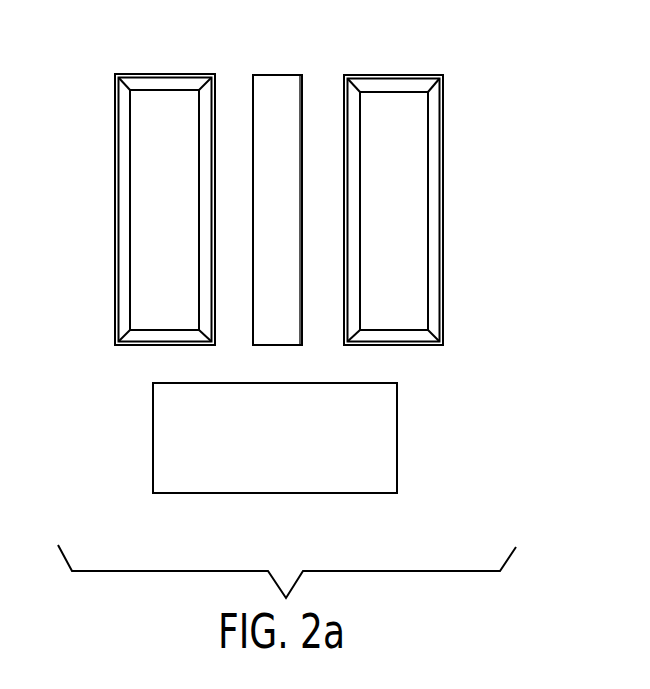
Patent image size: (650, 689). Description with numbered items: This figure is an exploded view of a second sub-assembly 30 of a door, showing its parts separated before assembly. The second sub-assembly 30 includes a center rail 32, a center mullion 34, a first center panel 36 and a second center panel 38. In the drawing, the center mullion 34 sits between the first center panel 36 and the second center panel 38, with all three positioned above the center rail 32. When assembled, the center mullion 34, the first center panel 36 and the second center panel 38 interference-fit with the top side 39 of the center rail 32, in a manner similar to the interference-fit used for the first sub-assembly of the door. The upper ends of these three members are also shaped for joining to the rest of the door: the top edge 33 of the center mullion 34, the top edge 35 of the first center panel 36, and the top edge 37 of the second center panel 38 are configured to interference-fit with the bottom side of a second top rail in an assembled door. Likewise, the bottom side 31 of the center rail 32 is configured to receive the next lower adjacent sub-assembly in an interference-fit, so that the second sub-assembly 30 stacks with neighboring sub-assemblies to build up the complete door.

The second sub-assembly 30 is at (577, 302).
The bottom side 31 is at (370, 494).
The center rail 32 is at (397, 456).
The top edge 33 is at (283, 74).
The center mullion 34 is at (253, 118).
The top edge 35 is at (147, 73).
The first center panel 36 is at (115, 142).
The top edge 37 is at (393, 75).
The second center panel 38 is at (443, 173).
The top side 39 is at (358, 378).